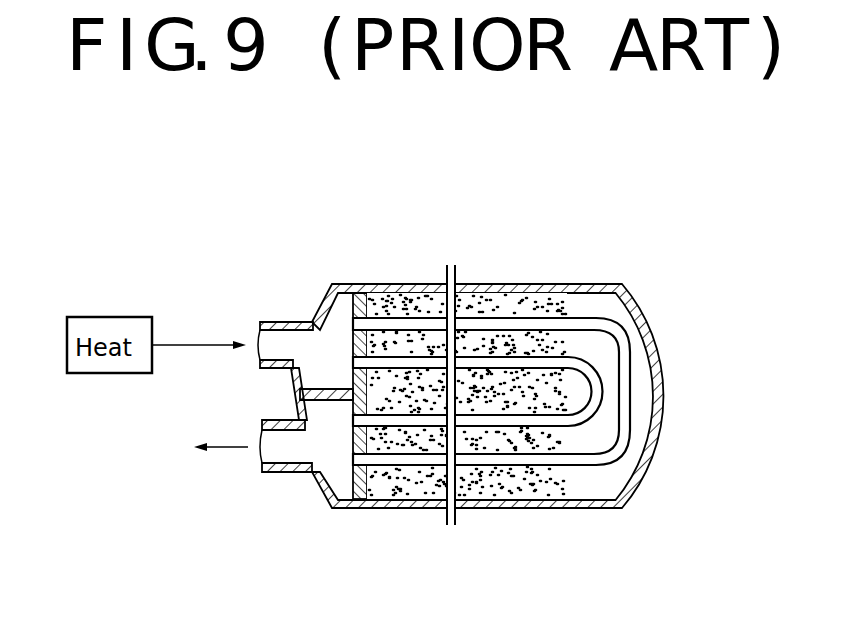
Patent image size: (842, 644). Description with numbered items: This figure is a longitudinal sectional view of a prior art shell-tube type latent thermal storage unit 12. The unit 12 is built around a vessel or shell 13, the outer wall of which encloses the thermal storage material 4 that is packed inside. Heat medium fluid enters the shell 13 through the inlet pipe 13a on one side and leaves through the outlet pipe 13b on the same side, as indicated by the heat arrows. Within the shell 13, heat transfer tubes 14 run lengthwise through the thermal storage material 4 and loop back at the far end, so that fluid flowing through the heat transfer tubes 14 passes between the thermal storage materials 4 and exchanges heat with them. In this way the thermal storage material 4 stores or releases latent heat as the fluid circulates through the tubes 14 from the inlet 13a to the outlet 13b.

The thermal storage material 4 is at (491, 448).
The shell-tube type thermal storage unit 12 is at (409, 276).
The casing 13 is at (541, 285).
The inlet pipe 13a is at (284, 345).
The outlet pipe 13b is at (284, 450).
The heat transfer tubes 14 is at (572, 462).